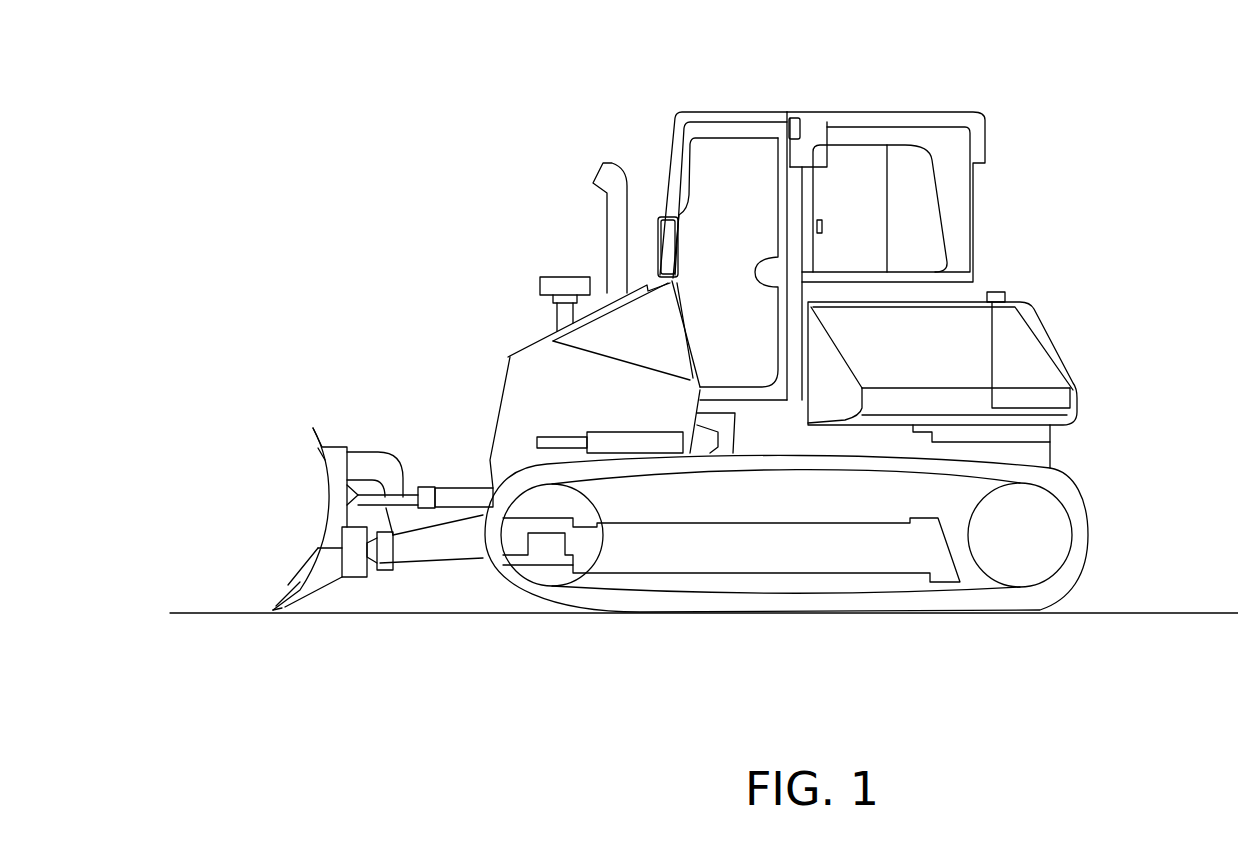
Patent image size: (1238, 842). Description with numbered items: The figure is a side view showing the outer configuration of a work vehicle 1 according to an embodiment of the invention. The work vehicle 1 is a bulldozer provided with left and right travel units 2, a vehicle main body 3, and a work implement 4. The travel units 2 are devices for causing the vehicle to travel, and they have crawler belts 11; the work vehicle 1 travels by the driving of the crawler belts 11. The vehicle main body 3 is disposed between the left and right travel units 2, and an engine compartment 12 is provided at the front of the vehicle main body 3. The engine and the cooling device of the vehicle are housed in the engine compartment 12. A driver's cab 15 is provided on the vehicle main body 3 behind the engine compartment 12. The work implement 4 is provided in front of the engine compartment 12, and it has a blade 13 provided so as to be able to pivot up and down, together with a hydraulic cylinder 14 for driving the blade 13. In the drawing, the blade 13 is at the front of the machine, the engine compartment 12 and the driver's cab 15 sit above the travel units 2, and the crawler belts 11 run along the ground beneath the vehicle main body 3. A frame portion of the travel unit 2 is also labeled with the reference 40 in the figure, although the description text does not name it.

The bulldozer 1 is at (358, 92).
The travel unit 2 is at (1128, 515).
The vehicle body 3 is at (1045, 187).
The work implement 4 is at (288, 375).
The crawler belt 11 is at (1080, 497).
The engine hood 12 is at (523, 357).
The blade 13 is at (317, 580).
The tilt cylinder 14 is at (455, 502).
The antenna 15 is at (772, 137).
The track frame 40 is at (765, 498).